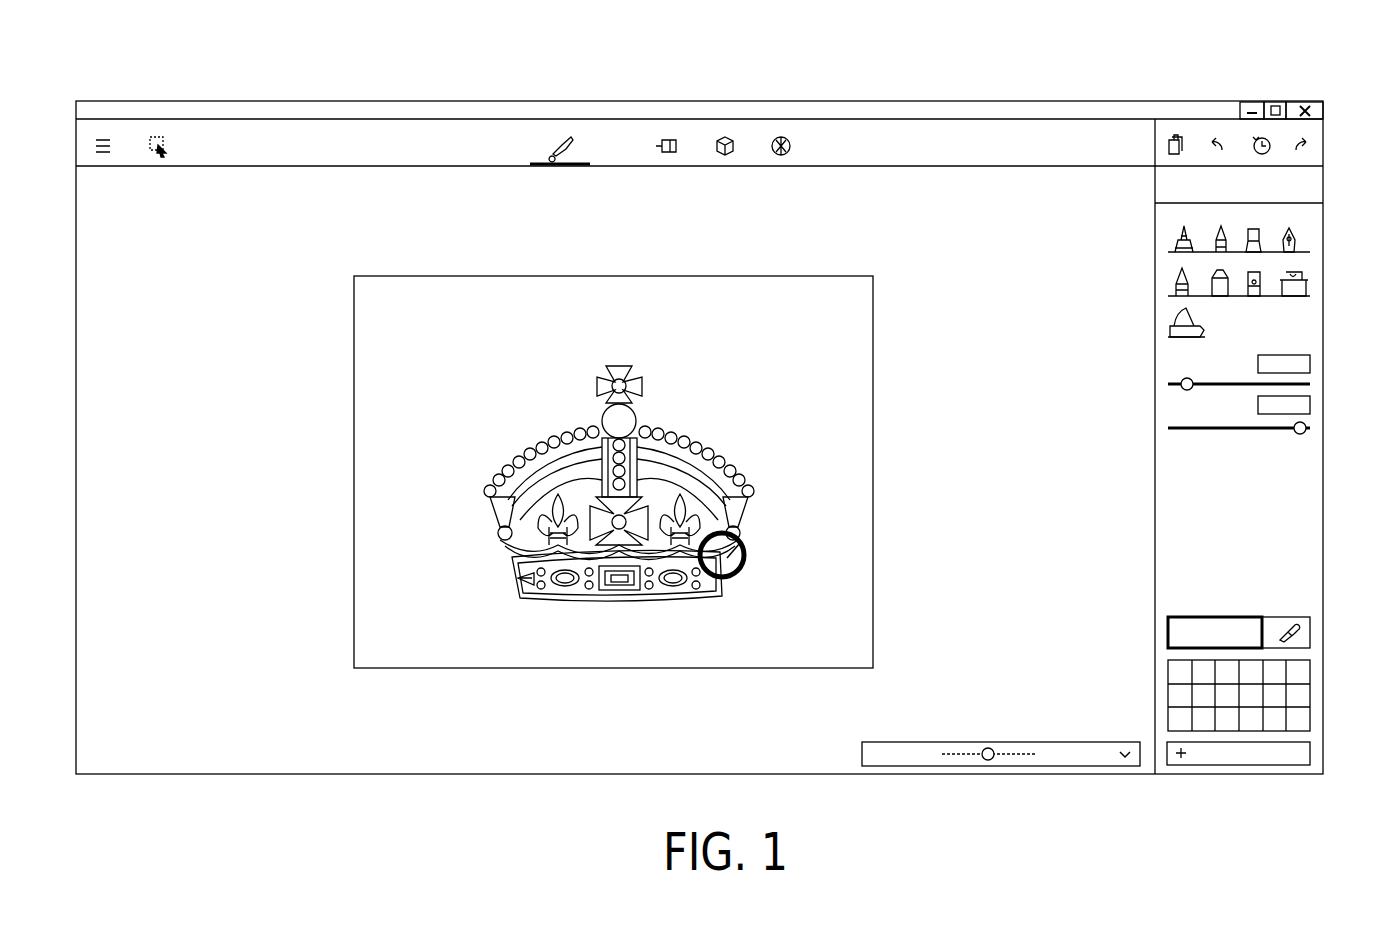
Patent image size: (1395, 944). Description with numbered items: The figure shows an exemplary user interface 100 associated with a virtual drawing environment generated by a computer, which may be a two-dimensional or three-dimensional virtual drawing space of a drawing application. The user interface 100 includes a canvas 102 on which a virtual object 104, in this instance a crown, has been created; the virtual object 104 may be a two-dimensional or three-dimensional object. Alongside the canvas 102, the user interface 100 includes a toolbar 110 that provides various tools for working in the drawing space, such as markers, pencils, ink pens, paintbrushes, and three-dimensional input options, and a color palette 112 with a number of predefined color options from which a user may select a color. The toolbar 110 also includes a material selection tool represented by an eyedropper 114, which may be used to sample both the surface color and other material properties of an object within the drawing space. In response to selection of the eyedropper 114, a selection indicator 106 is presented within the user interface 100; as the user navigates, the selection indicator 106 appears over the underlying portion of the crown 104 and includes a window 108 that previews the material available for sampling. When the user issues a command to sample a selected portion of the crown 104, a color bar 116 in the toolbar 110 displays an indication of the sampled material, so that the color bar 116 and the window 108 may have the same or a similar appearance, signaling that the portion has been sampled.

The user interface 100 is at (1257, 68).
The canvas 102 is at (826, 286).
The virtual object 104 is at (531, 428).
The selection indicator 106 is at (735, 575).
The window 108 is at (746, 553).
The toolbar 110 is at (1343, 262).
The color palette 112 is at (1318, 691).
The eyedropper 114 is at (1286, 616).
The color bar 116 is at (1215, 616).